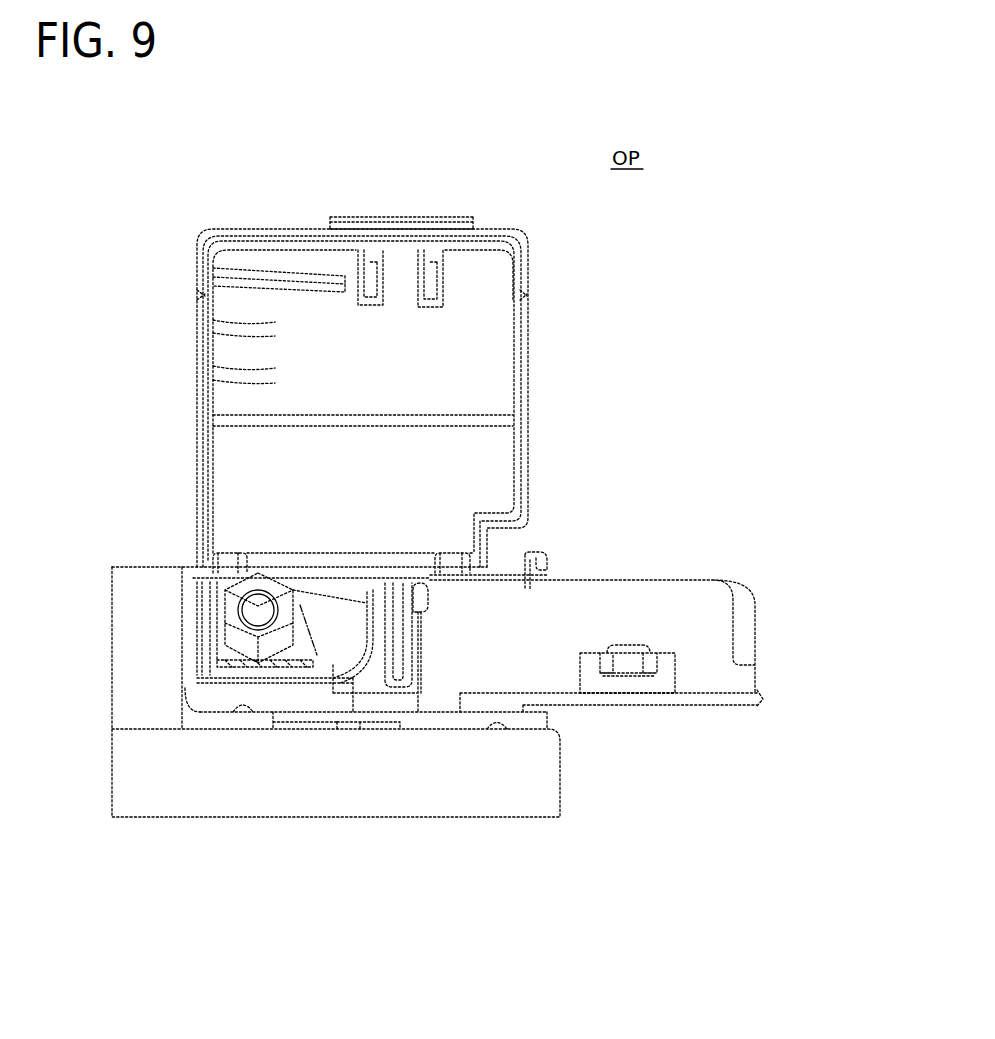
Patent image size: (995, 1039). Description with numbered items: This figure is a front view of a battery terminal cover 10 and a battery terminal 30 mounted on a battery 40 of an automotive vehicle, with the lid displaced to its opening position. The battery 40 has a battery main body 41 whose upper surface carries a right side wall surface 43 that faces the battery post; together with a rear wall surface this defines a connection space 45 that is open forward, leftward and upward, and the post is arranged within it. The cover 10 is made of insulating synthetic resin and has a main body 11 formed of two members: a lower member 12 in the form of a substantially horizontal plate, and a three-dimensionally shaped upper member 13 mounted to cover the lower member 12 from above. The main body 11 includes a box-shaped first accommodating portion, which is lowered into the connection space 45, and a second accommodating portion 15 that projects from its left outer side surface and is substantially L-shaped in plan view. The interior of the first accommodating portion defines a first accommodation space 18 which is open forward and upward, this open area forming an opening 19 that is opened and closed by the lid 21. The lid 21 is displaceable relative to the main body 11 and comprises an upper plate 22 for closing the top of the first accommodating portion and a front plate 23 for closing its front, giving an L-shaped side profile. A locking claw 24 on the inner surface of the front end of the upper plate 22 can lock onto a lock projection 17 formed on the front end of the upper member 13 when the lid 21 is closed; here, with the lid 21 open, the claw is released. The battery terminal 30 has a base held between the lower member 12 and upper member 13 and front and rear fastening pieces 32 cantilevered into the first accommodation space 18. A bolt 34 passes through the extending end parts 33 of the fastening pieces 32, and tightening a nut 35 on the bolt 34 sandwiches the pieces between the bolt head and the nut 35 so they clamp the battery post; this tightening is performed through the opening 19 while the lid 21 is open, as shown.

The battery terminal cover 10 is at (648, 285).
The main body 11 is at (438, 673).
The lower member 12 is at (695, 700).
The upper member 13 is at (645, 583).
The second accommodating portion 15 is at (636, 552).
The lock projection 17 is at (388, 600).
The first accommodation space 18 is at (347, 643).
The opening 19 is at (245, 702).
The lid 21 is at (524, 237).
The upper plate 22 is at (458, 356).
The front plate 23 is at (283, 228).
The locking claw 24 is at (430, 292).
The battery terminal 30 is at (326, 570).
The fastening pieces 32 is at (330, 636).
The extending end parts 33 is at (226, 652).
The bolt 34 is at (253, 605).
The nut 35 is at (233, 617).
The battery 40 is at (582, 835).
The battery main body 41 is at (520, 782).
The right side wall surface 43 is at (182, 670).
The connection space 45 is at (487, 715).